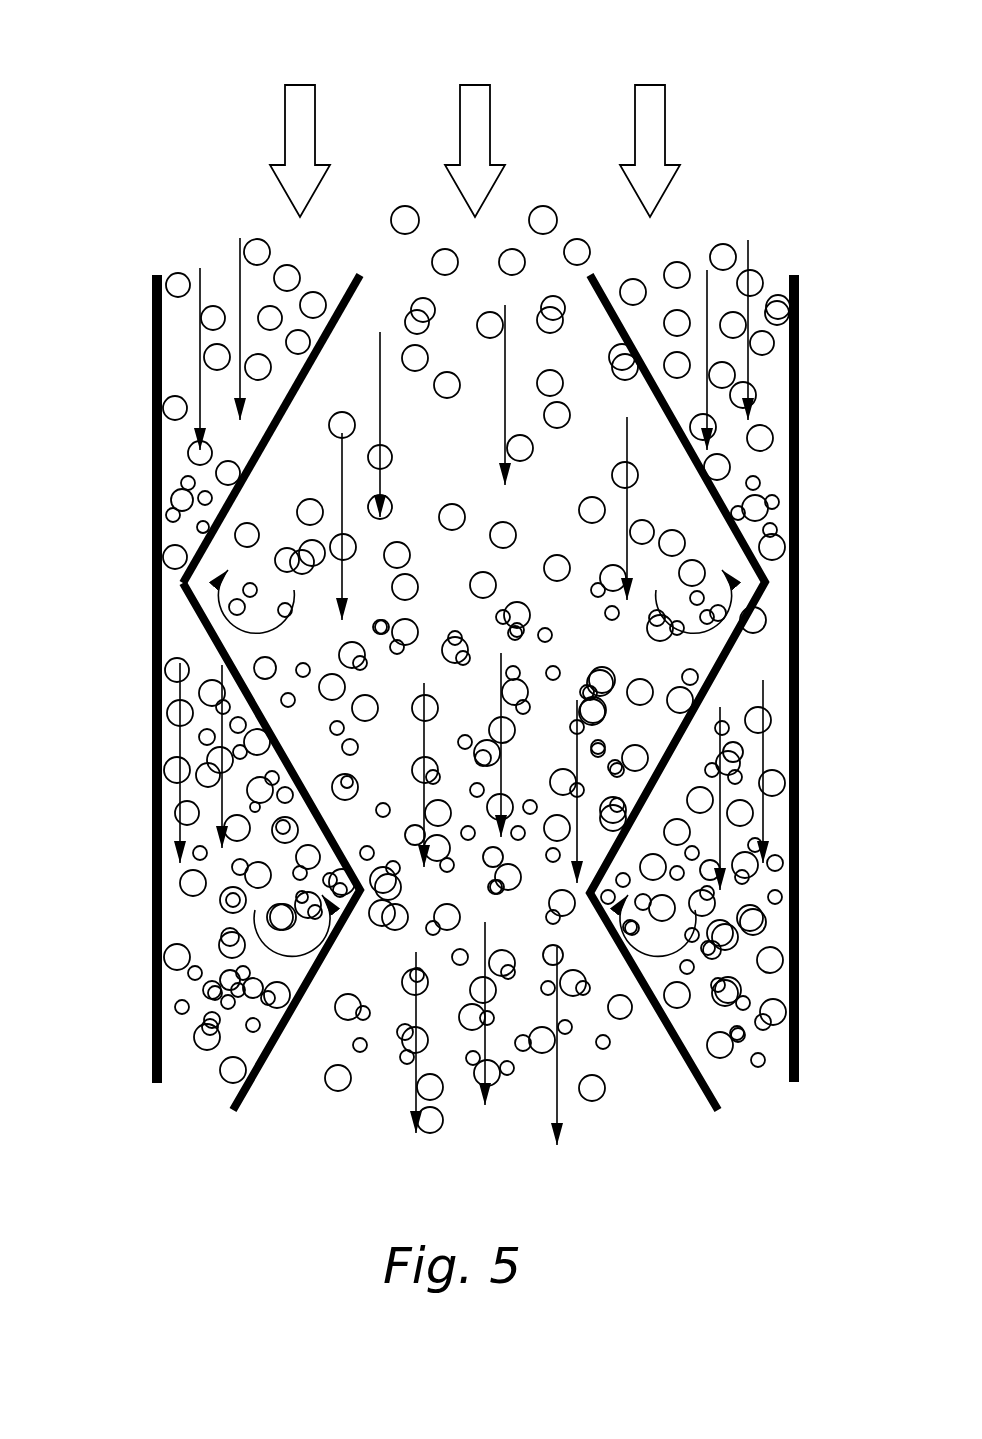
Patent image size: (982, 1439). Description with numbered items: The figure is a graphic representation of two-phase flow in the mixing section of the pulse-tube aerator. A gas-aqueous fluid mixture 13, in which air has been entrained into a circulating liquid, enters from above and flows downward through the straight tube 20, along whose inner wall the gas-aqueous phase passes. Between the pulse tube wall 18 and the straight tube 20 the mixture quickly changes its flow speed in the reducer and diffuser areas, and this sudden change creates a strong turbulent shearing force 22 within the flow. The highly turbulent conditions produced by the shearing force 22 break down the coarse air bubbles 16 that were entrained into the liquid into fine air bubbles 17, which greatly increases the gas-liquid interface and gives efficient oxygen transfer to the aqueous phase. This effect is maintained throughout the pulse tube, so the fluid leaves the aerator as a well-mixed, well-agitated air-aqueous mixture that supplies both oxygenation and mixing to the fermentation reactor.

The incoming flow 13 is at (285, 70).
The coarse air bubbles 16 is at (700, 698).
The fine air bubbles 17 is at (383, 810).
The baffle upper portion 18 is at (258, 447).
The straight tube 20 is at (799, 420).
The turbulent shearing force 22 is at (213, 628).